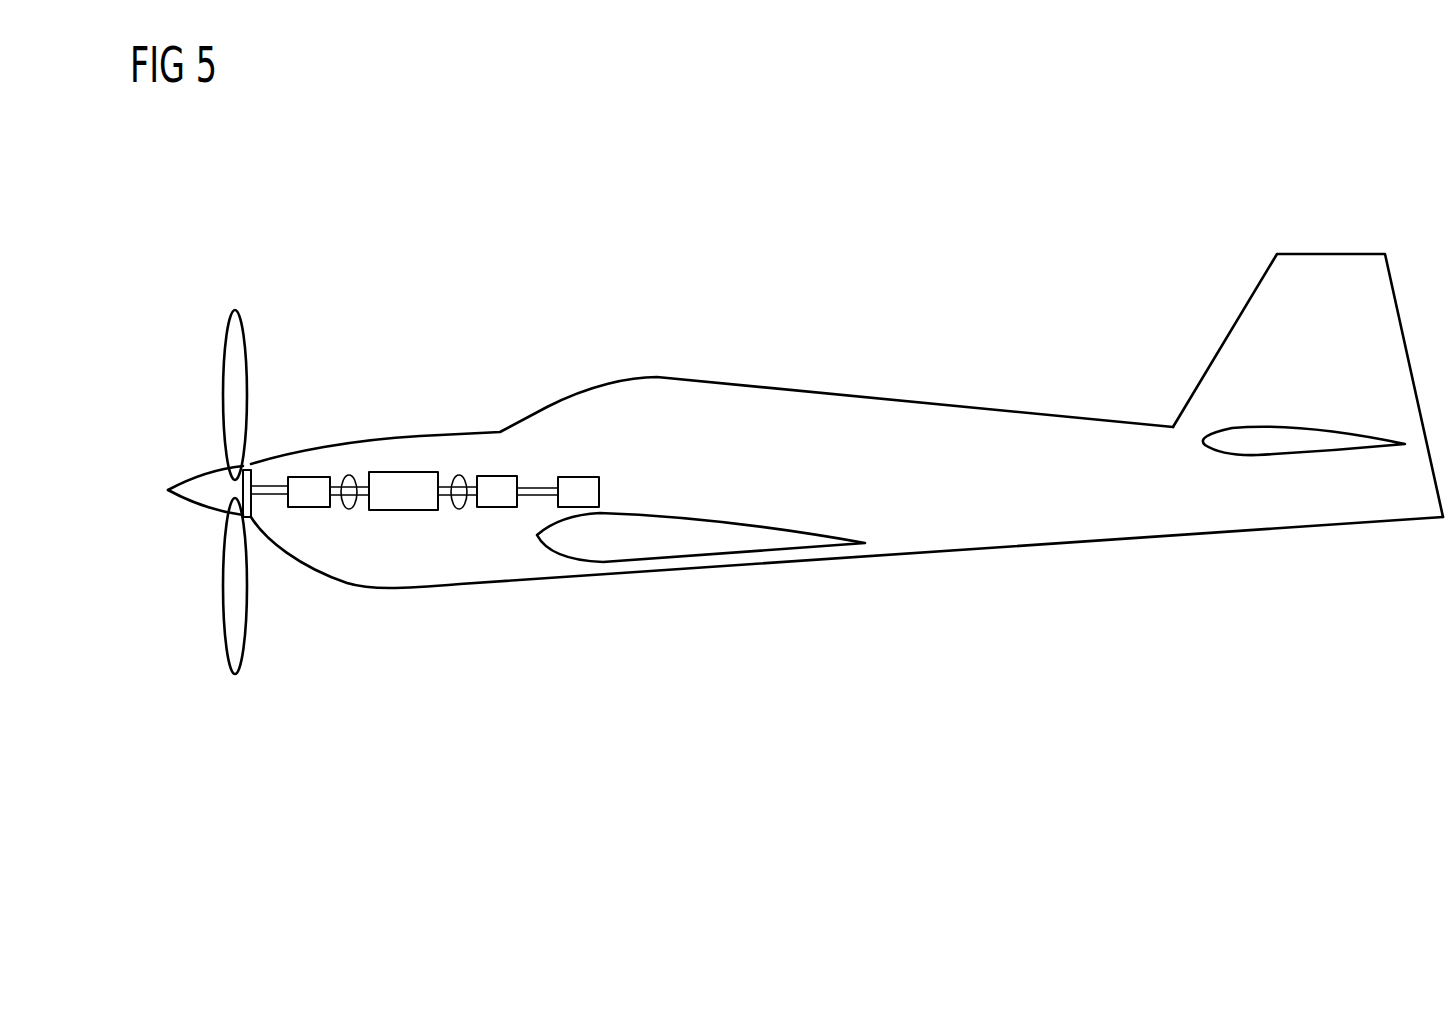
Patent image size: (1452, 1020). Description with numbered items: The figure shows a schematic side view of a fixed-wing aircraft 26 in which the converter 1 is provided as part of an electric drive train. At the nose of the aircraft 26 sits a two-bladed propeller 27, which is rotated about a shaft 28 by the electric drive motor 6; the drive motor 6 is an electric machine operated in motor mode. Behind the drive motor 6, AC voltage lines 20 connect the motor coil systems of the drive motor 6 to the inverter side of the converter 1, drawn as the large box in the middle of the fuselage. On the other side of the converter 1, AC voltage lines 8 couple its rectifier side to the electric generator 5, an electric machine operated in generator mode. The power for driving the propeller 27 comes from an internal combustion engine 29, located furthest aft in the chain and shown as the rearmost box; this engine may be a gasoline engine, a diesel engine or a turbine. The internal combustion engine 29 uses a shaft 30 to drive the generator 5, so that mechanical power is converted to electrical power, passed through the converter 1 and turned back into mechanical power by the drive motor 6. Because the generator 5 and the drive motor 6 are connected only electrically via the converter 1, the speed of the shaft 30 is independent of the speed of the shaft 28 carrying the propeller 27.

The converter 1 is at (404, 472).
The electric generator 5 is at (492, 476).
The electric drive motor 6 is at (310, 477).
The AC voltage lines 8 is at (459, 475).
The AC voltage lines 20 is at (349, 475).
The aircraft 26 is at (928, 401).
The propeller 27 is at (235, 310).
The shaft 28 is at (271, 487).
The internal combustion engine 29 is at (599, 490).
The shaft 30 is at (535, 488).